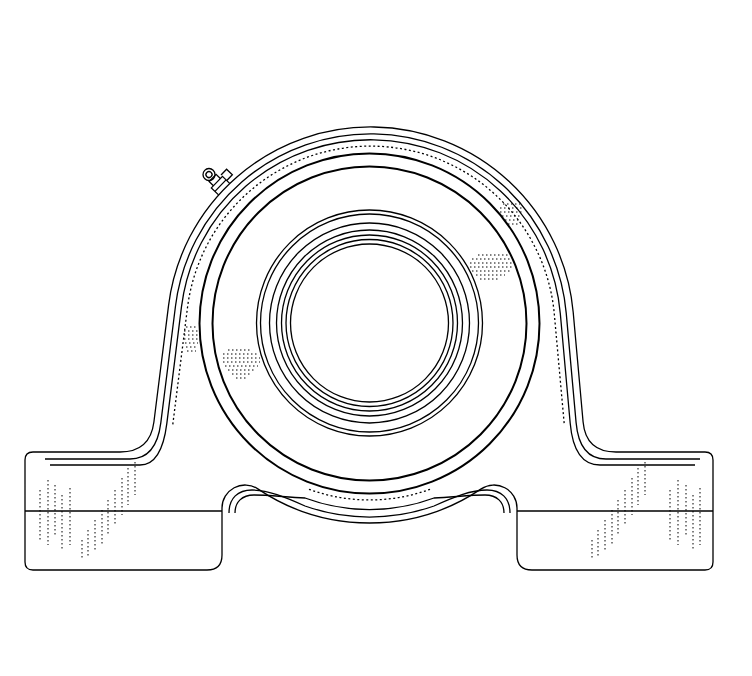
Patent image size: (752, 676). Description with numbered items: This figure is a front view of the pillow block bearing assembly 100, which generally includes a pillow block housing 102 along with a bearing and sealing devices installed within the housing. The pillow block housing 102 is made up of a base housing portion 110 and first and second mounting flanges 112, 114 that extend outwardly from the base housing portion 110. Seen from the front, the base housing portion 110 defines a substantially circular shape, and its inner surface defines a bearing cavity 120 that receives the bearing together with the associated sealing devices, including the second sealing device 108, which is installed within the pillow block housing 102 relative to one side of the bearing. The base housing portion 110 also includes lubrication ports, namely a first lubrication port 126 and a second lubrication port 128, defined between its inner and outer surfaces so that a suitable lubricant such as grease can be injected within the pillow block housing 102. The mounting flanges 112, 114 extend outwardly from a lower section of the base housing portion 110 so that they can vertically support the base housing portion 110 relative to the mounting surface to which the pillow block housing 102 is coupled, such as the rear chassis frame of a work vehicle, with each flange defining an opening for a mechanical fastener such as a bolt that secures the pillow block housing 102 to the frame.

The pillow block bearing assembly 100 is at (556, 90).
The pillow block housing 102 is at (568, 257).
The second sealing device 108 is at (393, 468).
The base housing portion 110 is at (522, 190).
The first mounting flange 112 is at (91, 480).
The second mounting flange 114 is at (665, 473).
The bearing cavity 120 is at (349, 367).
The first lubrication port 126 is at (208, 167).
The second lubrication port 128 is at (209, 174).